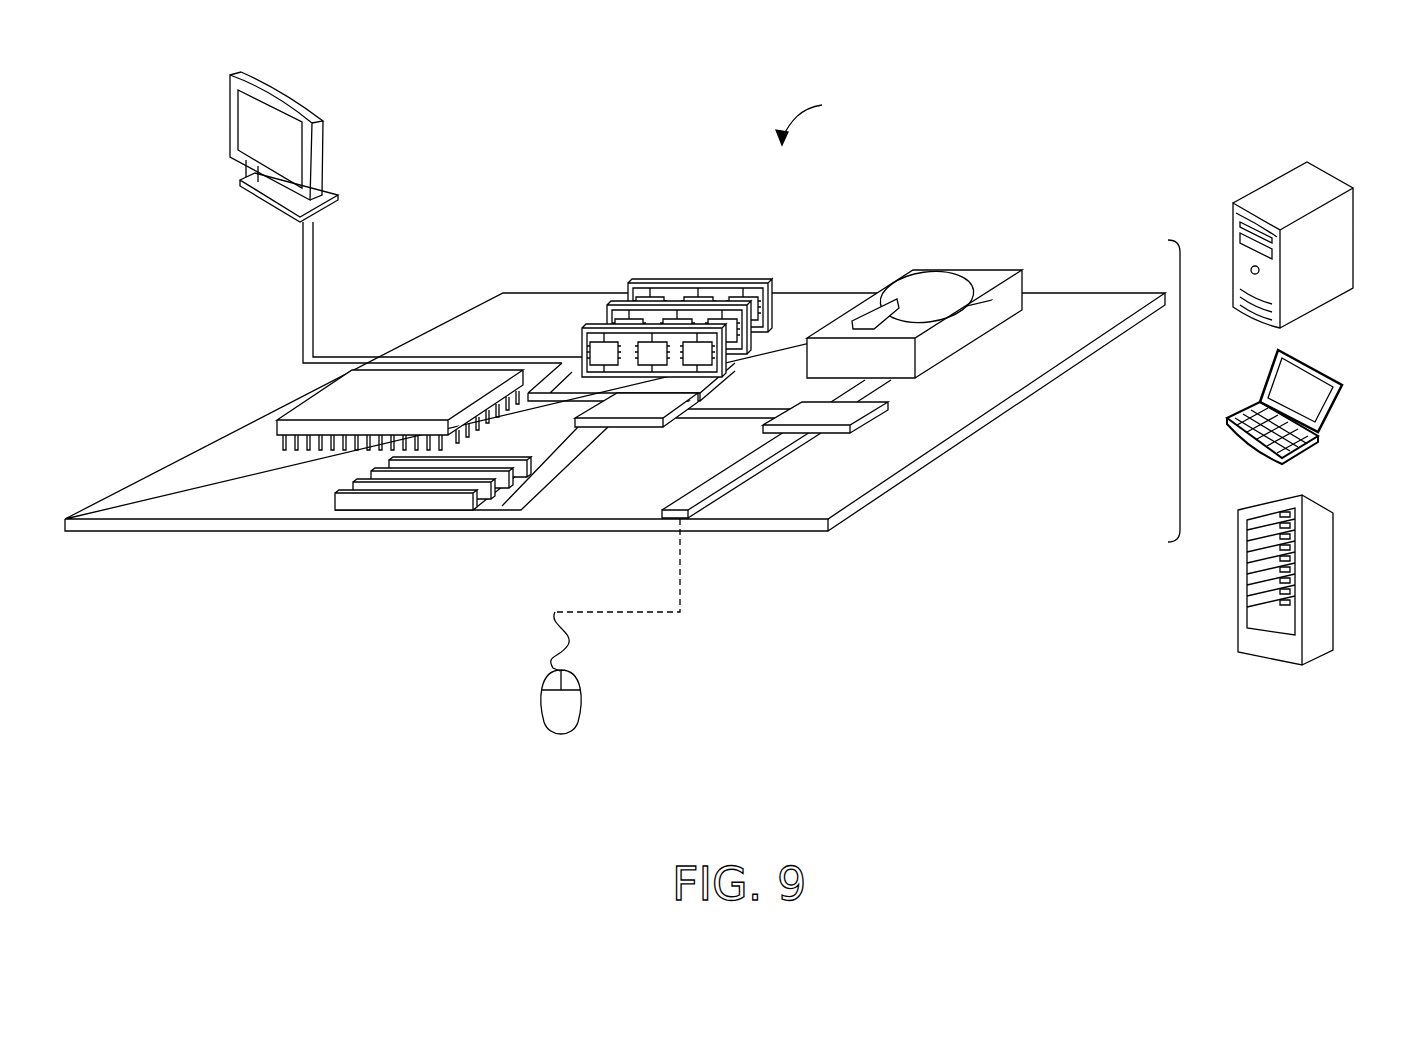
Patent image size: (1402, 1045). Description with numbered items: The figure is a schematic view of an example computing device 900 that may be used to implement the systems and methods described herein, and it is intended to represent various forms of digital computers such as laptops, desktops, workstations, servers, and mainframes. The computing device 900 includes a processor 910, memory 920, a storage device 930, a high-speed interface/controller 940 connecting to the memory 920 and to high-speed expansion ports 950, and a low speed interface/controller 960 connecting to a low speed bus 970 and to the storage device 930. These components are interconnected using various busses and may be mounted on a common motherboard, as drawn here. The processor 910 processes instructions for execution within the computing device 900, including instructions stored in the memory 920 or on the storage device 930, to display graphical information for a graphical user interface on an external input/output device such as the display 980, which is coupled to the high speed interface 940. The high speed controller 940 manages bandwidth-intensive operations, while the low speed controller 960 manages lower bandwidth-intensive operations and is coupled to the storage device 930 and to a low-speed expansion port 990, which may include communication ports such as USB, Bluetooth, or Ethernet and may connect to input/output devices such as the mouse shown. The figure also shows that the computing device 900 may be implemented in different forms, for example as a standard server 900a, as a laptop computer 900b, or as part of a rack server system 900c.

The computing device 900 is at (826, 120).
The processor 910 is at (277, 425).
The memory 920 is at (705, 283).
The storage device 930 is at (963, 268).
The high-speed interface/controller 940 is at (643, 427).
The high-speed expansion ports 950 is at (340, 500).
The low speed interface/controller 960 is at (815, 404).
The low speed bus 970 is at (767, 476).
The display 980 is at (228, 128).
The low-speed expansion port 990 is at (697, 527).
The standard server 900a is at (1263, 183).
The laptop computer 900b is at (1318, 372).
The rack server system 900c is at (1327, 558).